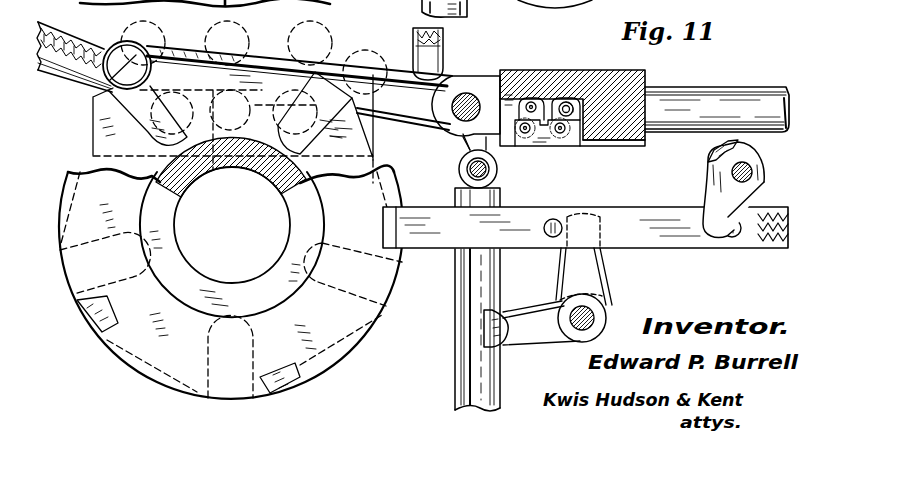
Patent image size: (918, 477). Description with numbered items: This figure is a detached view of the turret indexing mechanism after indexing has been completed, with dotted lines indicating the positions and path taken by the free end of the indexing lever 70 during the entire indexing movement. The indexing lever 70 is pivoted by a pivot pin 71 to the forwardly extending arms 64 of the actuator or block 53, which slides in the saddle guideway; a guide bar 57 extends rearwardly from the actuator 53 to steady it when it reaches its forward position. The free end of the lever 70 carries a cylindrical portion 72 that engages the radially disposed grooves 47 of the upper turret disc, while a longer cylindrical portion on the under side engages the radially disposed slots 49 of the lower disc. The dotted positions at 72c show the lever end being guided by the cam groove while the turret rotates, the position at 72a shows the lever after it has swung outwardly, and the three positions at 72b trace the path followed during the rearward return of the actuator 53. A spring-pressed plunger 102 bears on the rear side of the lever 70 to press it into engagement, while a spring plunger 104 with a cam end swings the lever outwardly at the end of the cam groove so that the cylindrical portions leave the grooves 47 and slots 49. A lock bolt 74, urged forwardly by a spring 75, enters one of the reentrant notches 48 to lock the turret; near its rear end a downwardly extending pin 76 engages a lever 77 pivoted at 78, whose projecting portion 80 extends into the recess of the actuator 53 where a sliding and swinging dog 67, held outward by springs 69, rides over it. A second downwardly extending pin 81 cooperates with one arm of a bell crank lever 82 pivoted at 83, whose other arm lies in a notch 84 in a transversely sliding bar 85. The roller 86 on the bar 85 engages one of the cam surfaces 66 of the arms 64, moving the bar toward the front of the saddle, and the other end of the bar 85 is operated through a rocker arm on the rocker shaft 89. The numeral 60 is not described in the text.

The radially disposed grooves 47 is at (343, 283).
The reentrant notches 48 is at (383, 228).
The radially disposed slots 49 is at (150, 153).
The actuator or block 53 is at (592, 72).
The guide bar 57 is at (705, 95).
The housing 60 is at (92, 115).
The forwardly extending arms 64 is at (456, 76).
The cam surface 66 is at (460, 136).
The sliding and swinging dog 67 is at (552, 146).
The springs 69 is at (554, 98).
The indexing lever 70 is at (253, 60).
The pivot pin 71 is at (452, 105).
The cylindrical portion 72 is at (122, 54).
The dotted line position of cylindrical portion 72a is at (152, 25).
The dotted line path positions 72b is at (246, 28).
The dotted line positions of lever portion 72c is at (218, 152).
The lock bolt 74 is at (630, 210).
The spring 75 is at (773, 210).
The downwardly extending pin 76 is at (737, 240).
The lever 77 is at (708, 182).
The pivot 78 is at (752, 165).
The projecting portion 80 is at (712, 158).
The second downwardly extending pin 81 is at (553, 218).
The bell crank lever 82 is at (576, 268).
The pivot 83 is at (566, 308).
The notch 84 is at (484, 343).
The bar 85 is at (466, 277).
The roller 86 is at (498, 170).
The rocker shaft 89 is at (510, 8).
The spring-pressed plunger 102 is at (412, 46).
The spring plunger 104 is at (87, 65).